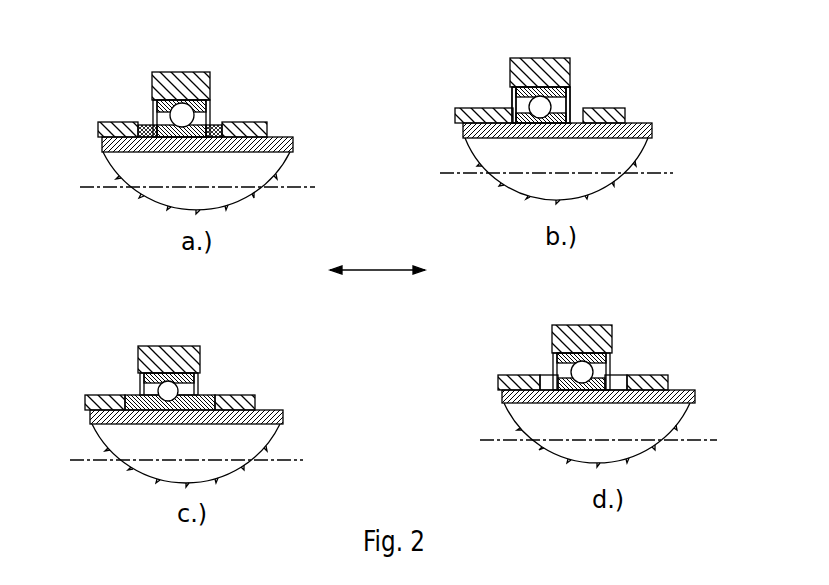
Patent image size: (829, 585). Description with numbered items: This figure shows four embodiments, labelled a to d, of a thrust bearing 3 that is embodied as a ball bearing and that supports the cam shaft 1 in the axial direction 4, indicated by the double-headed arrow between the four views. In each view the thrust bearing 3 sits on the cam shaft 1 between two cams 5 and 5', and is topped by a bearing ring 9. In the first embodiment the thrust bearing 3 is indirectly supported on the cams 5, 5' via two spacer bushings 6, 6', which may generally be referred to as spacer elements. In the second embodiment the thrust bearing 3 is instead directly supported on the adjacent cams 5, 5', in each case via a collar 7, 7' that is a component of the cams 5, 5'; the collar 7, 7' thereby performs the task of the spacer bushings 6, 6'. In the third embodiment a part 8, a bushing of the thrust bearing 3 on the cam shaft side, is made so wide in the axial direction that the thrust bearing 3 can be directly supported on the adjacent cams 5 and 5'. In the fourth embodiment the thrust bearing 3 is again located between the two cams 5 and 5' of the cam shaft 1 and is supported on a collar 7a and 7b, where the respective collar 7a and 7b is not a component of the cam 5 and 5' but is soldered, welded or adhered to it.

The cam shaft 1 is at (306, 184).
The thrust bearing 3 is at (207, 101).
The axial direction 4 is at (372, 272).
The cam 5 is at (402, 233).
The cam 5' is at (298, 89).
The spacer bushing 6 is at (229, 100).
The spacer bushing 6' is at (142, 69).
The collar 7 is at (592, 72).
The collar 7' is at (514, 62).
The collar 7a is at (617, 385).
The collar 7b is at (547, 382).
The part of the thrust bearing 8 is at (205, 400).
The bearing ring 9 is at (180, 85).